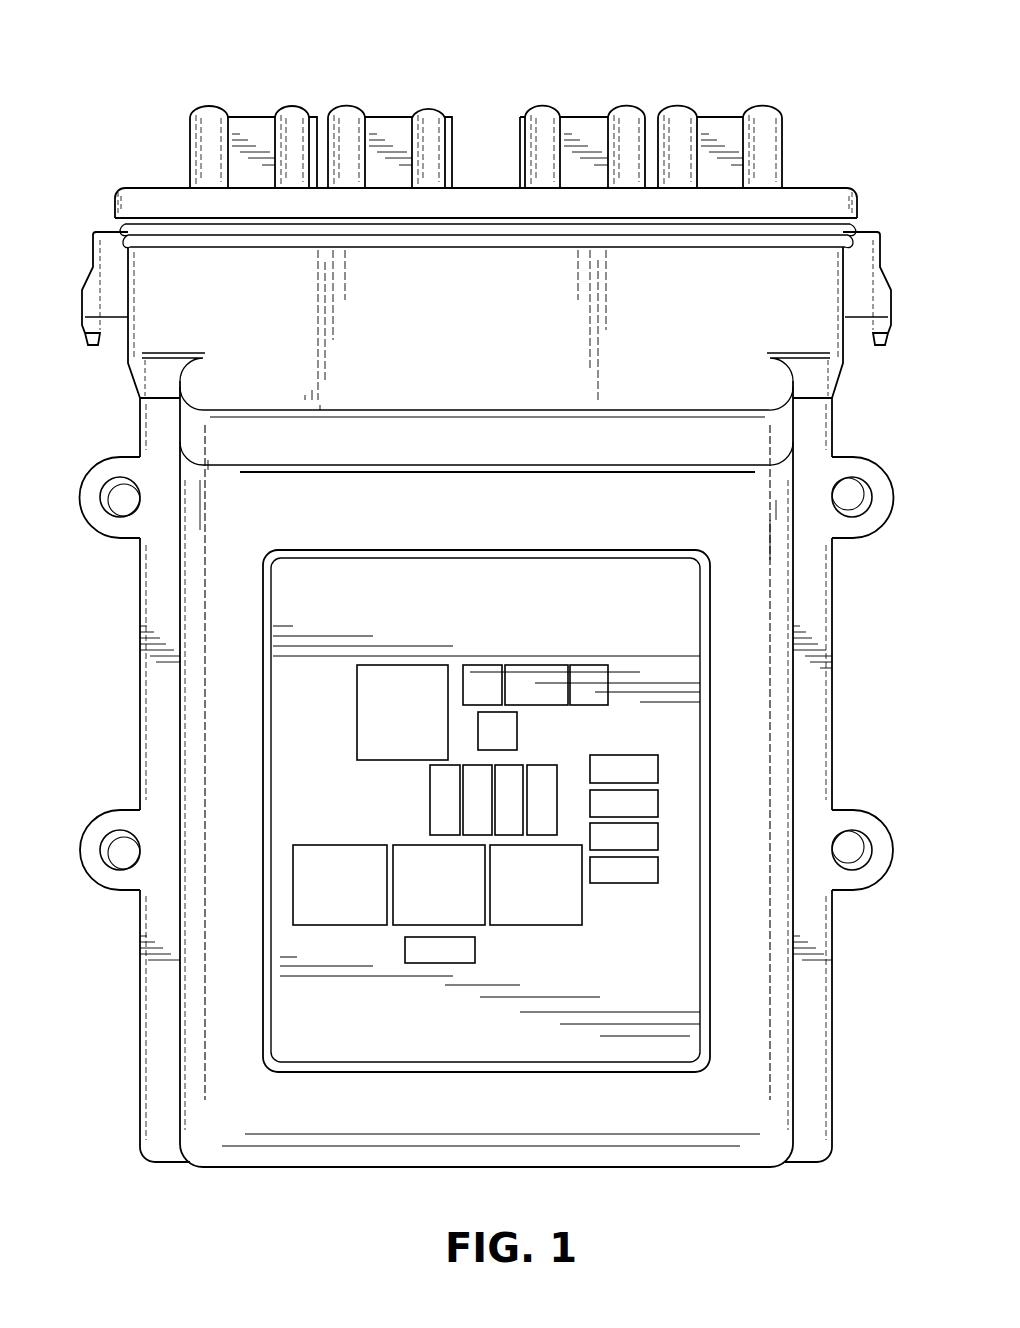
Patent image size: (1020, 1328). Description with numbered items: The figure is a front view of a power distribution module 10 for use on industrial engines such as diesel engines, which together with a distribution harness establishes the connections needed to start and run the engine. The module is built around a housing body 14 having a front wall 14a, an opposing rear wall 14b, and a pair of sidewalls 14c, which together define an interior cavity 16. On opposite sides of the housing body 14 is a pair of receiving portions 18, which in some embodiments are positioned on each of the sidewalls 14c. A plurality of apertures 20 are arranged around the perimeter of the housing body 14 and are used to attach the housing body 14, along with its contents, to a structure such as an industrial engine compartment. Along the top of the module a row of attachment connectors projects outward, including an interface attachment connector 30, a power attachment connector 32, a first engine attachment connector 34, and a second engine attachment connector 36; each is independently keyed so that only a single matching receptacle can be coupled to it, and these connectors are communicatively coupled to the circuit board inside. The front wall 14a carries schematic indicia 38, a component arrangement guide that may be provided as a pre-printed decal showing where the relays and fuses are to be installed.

The power distribution module 10 is at (48, 76).
The housing body 14 is at (48, 368).
The front wall 14a is at (500, 523).
The rear wall 14b is at (832, 642).
The sidewalls 14c is at (133, 385).
The interior cavity 16 is at (213, 1117).
The receiving portions 18 is at (103, 233).
The apertures 20 is at (117, 530).
The interface attachment connector 30 is at (726, 122).
The power attachment connector 32 is at (586, 122).
The first engine attachment connector 34 is at (388, 122).
The second engine attachment connector 36 is at (257, 122).
The schematic indicia 38 is at (640, 1048).